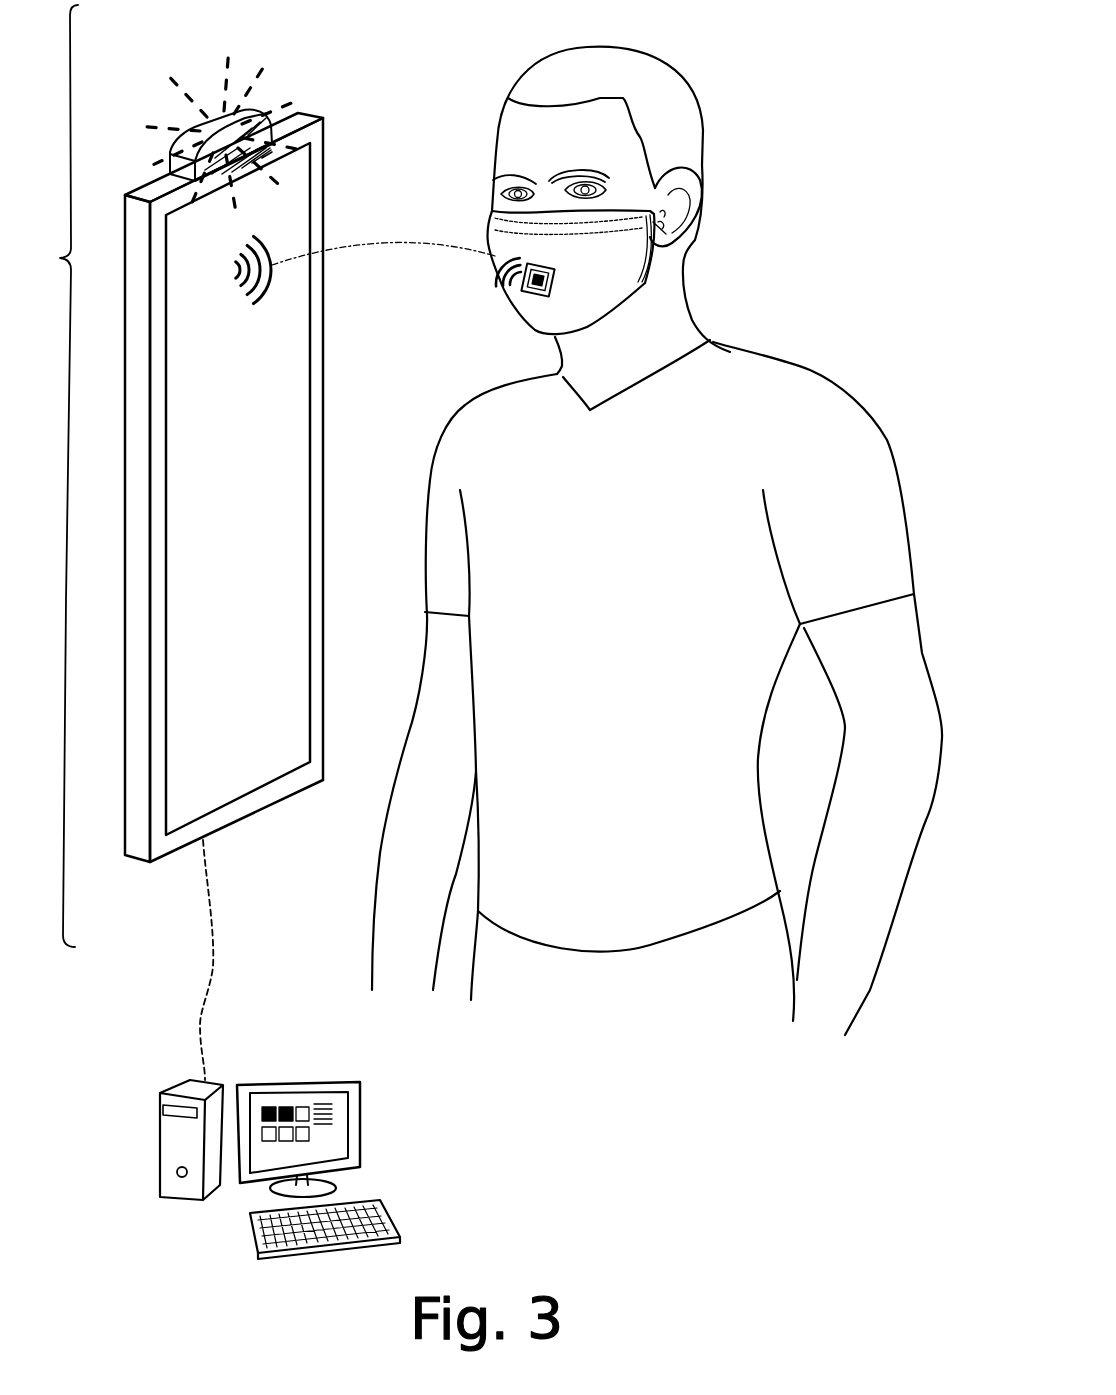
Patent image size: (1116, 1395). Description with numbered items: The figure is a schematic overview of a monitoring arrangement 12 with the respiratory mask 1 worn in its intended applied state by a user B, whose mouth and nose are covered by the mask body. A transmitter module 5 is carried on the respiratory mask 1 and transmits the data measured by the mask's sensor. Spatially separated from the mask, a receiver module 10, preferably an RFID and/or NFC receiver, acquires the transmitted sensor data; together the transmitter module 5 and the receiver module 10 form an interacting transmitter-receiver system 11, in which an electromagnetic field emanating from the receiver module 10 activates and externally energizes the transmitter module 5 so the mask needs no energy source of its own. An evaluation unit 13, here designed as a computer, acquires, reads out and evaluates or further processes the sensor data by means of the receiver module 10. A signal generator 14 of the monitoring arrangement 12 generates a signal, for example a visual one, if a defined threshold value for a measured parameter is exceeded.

The respiratory mask 1 is at (507, 240).
The transmitter module 5 is at (553, 293).
The receiver module 10 is at (207, 277).
The transmitter-receiver system 11 is at (490, 250).
The monitoring arrangement 12 is at (52, 476).
The evaluation unit 13 is at (165, 1014).
The signal generator 14 is at (263, 113).
The user B is at (756, 48).